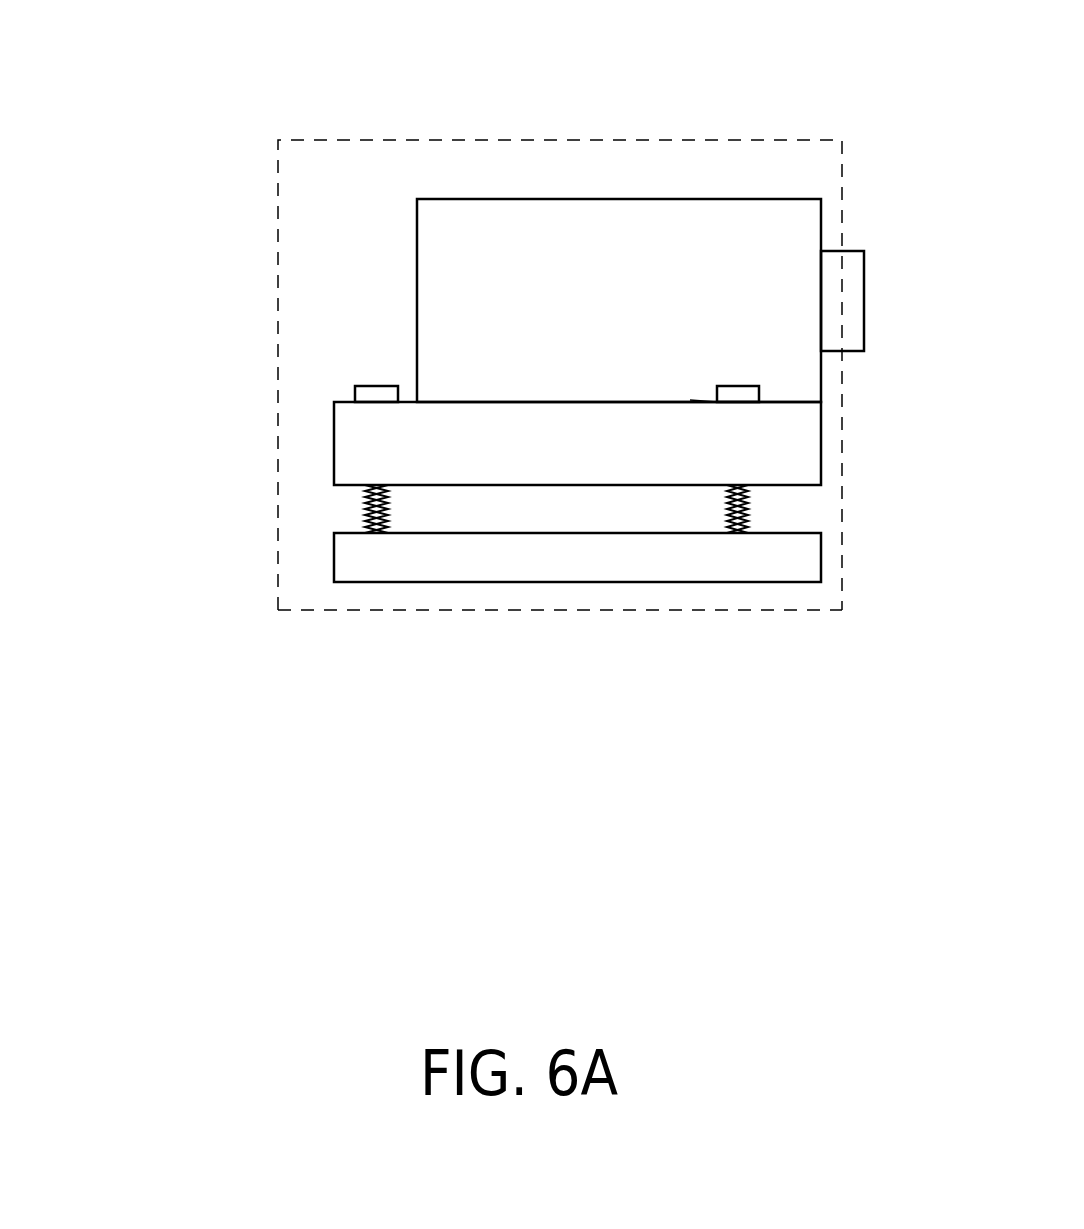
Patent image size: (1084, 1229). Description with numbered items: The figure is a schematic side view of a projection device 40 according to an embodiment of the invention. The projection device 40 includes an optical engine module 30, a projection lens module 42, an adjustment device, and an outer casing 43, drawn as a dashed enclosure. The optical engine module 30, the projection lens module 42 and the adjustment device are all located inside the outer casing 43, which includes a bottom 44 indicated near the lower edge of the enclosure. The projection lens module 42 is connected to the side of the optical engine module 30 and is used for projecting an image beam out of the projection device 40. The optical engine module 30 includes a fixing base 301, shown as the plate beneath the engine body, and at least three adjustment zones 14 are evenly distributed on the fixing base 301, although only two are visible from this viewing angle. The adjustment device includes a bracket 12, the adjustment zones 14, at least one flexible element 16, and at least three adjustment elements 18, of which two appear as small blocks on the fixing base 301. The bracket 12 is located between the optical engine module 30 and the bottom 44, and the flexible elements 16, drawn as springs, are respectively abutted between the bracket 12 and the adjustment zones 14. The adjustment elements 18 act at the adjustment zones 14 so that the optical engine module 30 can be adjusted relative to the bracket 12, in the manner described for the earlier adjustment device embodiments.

The projection device 40 is at (214, 63).
The outer casing 43 is at (383, 138).
The bottom 44 is at (306, 648).
The optical engine module 30 is at (590, 228).
The fixing base 301 is at (355, 444).
The projection lens module 42 is at (853, 327).
The adjustment element 18 is at (741, 395).
The bracket 12 is at (593, 558).
The adjustment zone 14 is at (706, 392).
The flexible element 16 is at (748, 508).